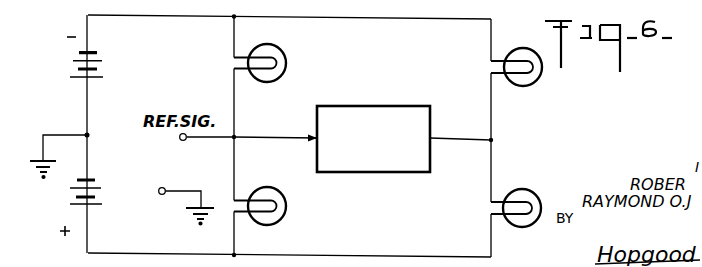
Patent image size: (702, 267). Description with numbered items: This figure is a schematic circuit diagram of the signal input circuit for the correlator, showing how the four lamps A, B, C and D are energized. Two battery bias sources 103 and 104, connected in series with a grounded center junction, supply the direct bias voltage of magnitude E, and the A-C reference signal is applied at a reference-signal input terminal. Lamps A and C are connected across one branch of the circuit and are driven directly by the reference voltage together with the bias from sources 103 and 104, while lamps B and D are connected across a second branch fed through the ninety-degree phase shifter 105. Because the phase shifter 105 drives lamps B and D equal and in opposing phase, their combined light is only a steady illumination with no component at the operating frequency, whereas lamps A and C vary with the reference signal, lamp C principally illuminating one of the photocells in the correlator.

The bias source 103 is at (105, 63).
The bias source 104 is at (104, 197).
The 90° phase shifter 105 is at (385, 93).
The lamp A is at (281, 46).
The lamp B is at (519, 87).
The lamp C is at (281, 195).
The lamp D is at (522, 189).